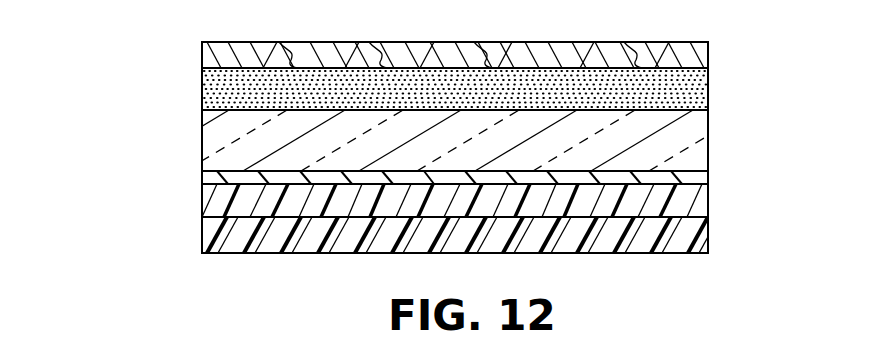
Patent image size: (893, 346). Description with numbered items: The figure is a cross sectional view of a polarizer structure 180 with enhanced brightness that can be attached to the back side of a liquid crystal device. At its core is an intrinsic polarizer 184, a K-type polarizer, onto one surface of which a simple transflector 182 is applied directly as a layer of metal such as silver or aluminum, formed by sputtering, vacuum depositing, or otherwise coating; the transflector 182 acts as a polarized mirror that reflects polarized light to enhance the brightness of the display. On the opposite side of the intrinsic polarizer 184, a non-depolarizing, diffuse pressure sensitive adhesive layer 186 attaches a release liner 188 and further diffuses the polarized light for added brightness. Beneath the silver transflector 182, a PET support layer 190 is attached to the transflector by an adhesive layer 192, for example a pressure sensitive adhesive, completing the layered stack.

The polarizer structure 180 is at (122, 100).
The transflector 182 is at (707, 177).
The intrinsic polarizer 184 is at (706, 136).
The diffuse pressure sensitive adhesive layer 186 is at (708, 92).
The release liner 188 is at (708, 51).
The PET support layer 190 is at (698, 228).
The adhesive layer 192 is at (702, 198).